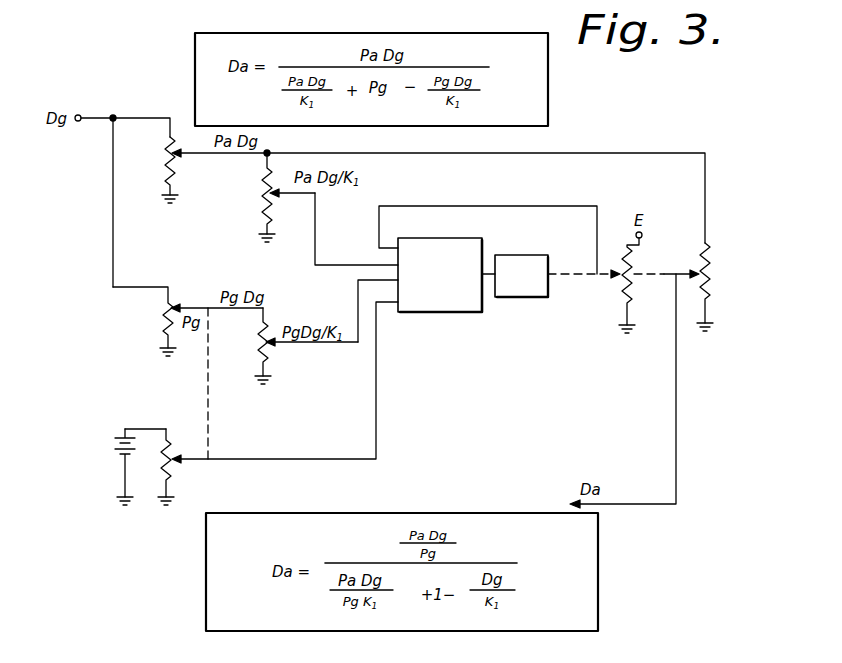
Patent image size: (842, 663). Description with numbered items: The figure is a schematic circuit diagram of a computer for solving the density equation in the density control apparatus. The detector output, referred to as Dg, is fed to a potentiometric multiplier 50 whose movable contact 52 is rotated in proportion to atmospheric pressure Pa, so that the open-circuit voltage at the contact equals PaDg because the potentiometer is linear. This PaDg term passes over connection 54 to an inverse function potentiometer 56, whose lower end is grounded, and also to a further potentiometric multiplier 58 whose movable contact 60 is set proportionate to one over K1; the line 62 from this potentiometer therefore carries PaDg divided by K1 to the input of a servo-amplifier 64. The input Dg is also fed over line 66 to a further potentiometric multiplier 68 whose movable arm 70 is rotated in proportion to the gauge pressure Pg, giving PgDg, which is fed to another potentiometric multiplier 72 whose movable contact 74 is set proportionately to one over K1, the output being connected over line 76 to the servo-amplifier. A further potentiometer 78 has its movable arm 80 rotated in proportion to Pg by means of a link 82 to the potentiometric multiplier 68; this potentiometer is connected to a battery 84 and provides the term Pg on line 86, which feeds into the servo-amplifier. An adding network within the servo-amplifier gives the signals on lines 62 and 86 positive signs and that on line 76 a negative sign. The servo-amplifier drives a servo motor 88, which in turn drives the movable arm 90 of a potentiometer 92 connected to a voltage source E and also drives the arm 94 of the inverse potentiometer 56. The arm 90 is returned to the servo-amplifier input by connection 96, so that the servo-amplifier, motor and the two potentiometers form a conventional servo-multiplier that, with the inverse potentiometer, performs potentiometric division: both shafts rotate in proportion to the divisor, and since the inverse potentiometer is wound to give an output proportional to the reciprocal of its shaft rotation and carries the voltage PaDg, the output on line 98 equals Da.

The potentiometric multiplier 50 is at (165, 175).
The movable contact 52 is at (180, 157).
The connection 54 is at (568, 153).
The inverse function potentiometer 56 is at (712, 284).
The potentiometric multiplier 58 is at (262, 210).
The movable contact 60 is at (284, 197).
The line 62 is at (313, 256).
The servo-amplifier 64 is at (461, 312).
The line 66 is at (112, 220).
The potentiometric multiplier 68 is at (162, 322).
The movable arm 70 is at (180, 303).
The potentiometric multiplier 72 is at (258, 354).
The movable contact 74 is at (276, 348).
The line 76 is at (357, 296).
The potentiometer 78 is at (170, 444).
The movable arm 80 is at (178, 463).
The link 82 is at (207, 385).
The battery 84 is at (117, 448).
The line 86 is at (378, 406).
The servo motor 88 is at (523, 297).
The movable arm 90 is at (618, 278).
The potentiometer 92 is at (624, 302).
The arm 94 is at (693, 270).
The connection 96 is at (546, 204).
The line 98 is at (676, 381).